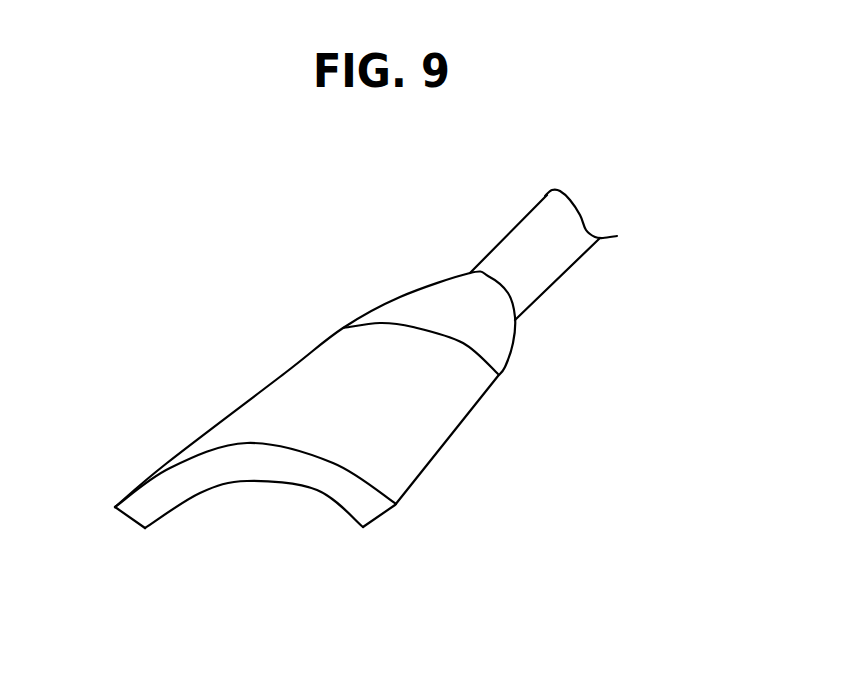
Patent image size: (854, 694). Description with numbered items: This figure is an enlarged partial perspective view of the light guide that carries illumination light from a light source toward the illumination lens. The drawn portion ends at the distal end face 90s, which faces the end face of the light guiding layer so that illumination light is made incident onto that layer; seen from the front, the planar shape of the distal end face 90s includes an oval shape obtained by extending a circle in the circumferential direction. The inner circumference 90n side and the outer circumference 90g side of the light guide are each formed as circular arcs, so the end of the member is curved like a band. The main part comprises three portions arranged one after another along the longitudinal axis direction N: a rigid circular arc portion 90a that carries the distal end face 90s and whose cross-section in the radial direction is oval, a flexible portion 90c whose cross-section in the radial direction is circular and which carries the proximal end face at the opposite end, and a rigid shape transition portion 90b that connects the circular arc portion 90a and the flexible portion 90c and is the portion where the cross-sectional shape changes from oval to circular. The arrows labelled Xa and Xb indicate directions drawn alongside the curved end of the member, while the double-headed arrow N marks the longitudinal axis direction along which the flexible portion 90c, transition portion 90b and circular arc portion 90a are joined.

The circular arc portion 90a is at (340, 393).
The shape transition portion 90b is at (452, 312).
The flexible portion 90c is at (540, 260).
The outer circumference side 90g is at (295, 405).
The inner circumference side 90n is at (202, 495).
The distal end face 90s is at (320, 475).
The direction Xa is at (243, 537).
The direction Xb is at (493, 456).
The longitudinal axis direction N is at (630, 327).